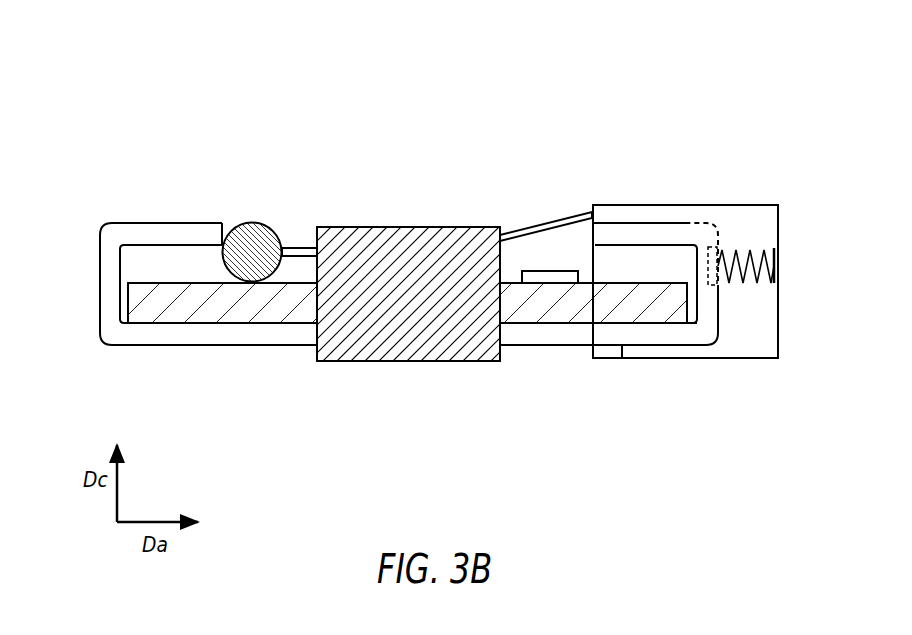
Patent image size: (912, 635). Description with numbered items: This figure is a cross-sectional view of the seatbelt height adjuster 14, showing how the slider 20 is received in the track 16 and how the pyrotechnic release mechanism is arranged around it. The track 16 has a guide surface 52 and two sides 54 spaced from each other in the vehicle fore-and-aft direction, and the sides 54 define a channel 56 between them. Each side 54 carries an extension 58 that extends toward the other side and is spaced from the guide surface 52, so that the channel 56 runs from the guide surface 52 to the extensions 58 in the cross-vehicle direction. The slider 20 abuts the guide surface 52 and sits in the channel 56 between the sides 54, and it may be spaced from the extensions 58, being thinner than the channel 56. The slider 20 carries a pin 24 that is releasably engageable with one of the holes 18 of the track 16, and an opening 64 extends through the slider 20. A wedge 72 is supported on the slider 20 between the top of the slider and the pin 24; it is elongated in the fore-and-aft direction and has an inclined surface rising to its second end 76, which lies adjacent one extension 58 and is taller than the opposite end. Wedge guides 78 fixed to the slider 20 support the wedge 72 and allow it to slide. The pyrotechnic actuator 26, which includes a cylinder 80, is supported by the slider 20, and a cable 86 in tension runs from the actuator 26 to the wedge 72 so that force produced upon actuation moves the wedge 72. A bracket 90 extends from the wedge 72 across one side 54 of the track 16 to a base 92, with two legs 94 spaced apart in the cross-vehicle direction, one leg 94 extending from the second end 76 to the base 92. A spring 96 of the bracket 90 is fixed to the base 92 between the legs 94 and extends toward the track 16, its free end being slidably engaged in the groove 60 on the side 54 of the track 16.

The seatbelt height adjuster 14 is at (656, 84).
The track 16 is at (99, 221).
The holes 18 is at (505, 338).
The slider 20 is at (165, 276).
The pin 24 is at (358, 362).
The pyrotechnic actuator 26 is at (249, 220).
The guide surface 52 is at (178, 324).
The sides 54 is at (100, 297).
The channel 56 is at (136, 269).
The extension 58 is at (182, 222).
The groove 60 is at (708, 247).
The opening 64 is at (503, 300).
The wedge 72 is at (548, 270).
The second end 76 is at (591, 212).
The wedge guides 78 is at (519, 226).
The cylinder 80 is at (284, 268).
The cable 86 is at (294, 248).
The bracket 90 is at (784, 226).
The base 92 is at (780, 332).
The legs 94 is at (642, 205).
The spring 96 is at (765, 258).